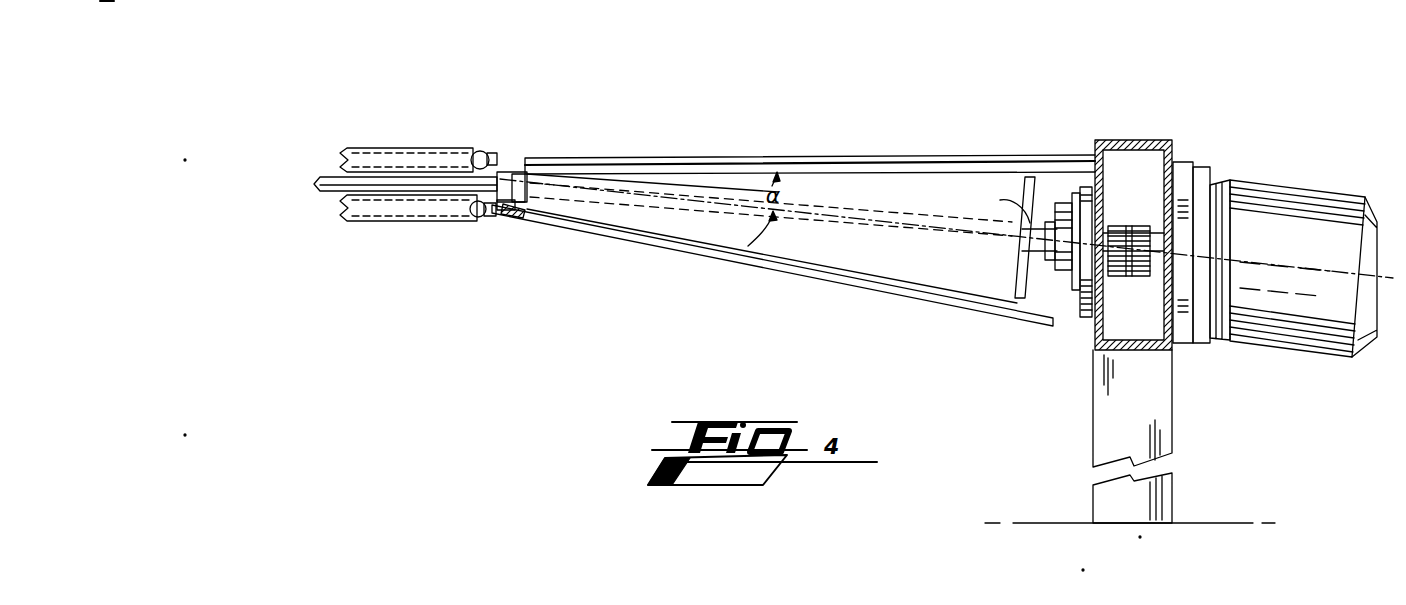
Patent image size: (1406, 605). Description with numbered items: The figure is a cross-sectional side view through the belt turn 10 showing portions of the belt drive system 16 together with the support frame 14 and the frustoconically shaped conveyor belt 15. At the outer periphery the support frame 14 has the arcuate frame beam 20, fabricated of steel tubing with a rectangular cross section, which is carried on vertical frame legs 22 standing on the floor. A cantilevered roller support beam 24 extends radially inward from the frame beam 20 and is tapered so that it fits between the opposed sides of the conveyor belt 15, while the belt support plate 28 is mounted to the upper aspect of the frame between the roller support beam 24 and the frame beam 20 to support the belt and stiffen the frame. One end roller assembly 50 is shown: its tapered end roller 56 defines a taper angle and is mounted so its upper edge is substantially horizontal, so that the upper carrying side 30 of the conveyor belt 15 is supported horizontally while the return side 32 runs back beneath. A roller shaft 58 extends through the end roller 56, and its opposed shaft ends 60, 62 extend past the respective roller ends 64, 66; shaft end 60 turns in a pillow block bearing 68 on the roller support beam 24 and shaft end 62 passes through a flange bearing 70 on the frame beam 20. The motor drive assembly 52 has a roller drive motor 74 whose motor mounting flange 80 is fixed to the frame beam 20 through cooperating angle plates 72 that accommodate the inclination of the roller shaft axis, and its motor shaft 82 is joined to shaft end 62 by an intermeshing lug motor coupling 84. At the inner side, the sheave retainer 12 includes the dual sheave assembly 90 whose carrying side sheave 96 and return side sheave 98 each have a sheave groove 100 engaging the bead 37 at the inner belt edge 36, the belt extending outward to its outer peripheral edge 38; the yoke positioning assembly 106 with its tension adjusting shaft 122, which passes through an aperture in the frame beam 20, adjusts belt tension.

The belt turn 10 is at (779, 79).
The sheave retainer 12 is at (375, 139).
The support frame 14 is at (1170, 80).
The conveyor belt 15 is at (684, 257).
The belt drive system 16 is at (926, 311).
The frame beam 20 is at (1128, 140).
The frame legs 22 is at (1173, 420).
The roller support beam 24 is at (530, 172).
The belt support plate 28 is at (1075, 160).
The upper carrying side 30 is at (1002, 157).
The return side 32 is at (757, 270).
The inner belt edge 36 is at (500, 171).
The bead 37 is at (480, 151).
The outer peripheral edge 38 is at (1073, 157).
The end roller assembly 50 is at (500, 222).
The motor drive assembly 52 is at (1268, 121).
The end roller 56 is at (663, 155).
The roller shaft 58 is at (907, 217).
The shaft end 60 is at (493, 228).
The shaft end 62 is at (1027, 213).
The end roller end 64 is at (530, 218).
The end roller end 66 is at (1043, 320).
The pillow block bearing 68 is at (535, 170).
The flange bearing 70 is at (1066, 202).
The angle plate 72 is at (1185, 160).
The roller drive motor 74 is at (1326, 182).
The motor mounting flange 80 is at (1203, 165).
The motor shaft 82 is at (1155, 268).
The intermeshing lug motor coupling 84 is at (1118, 226).
The dual sheave assembly 90 is at (407, 147).
The carrying side sheave 96 is at (437, 147).
The return side sheave 98 is at (352, 225).
The sheave groove 100 is at (447, 147).
The yoke positioning assembly 106 is at (438, 196).
The tension adjusting shaft 122 is at (362, 222).